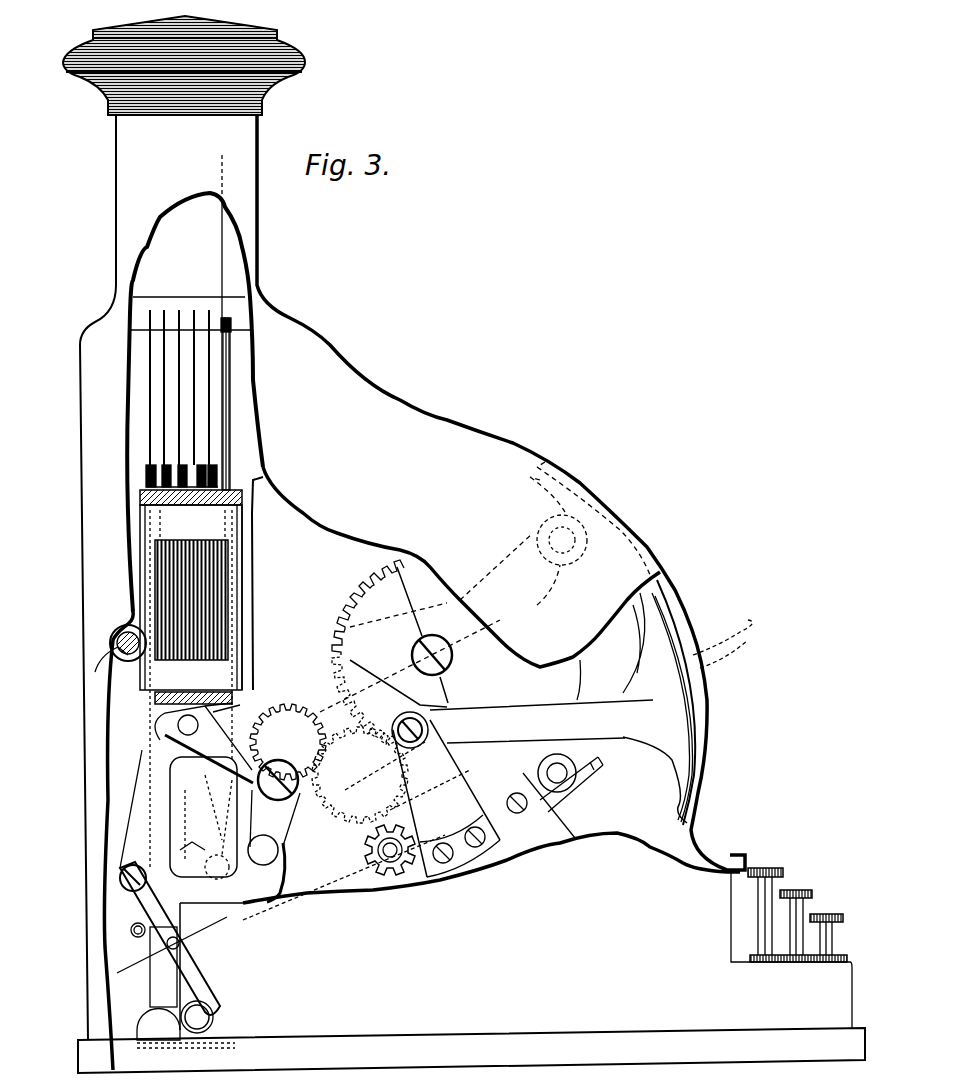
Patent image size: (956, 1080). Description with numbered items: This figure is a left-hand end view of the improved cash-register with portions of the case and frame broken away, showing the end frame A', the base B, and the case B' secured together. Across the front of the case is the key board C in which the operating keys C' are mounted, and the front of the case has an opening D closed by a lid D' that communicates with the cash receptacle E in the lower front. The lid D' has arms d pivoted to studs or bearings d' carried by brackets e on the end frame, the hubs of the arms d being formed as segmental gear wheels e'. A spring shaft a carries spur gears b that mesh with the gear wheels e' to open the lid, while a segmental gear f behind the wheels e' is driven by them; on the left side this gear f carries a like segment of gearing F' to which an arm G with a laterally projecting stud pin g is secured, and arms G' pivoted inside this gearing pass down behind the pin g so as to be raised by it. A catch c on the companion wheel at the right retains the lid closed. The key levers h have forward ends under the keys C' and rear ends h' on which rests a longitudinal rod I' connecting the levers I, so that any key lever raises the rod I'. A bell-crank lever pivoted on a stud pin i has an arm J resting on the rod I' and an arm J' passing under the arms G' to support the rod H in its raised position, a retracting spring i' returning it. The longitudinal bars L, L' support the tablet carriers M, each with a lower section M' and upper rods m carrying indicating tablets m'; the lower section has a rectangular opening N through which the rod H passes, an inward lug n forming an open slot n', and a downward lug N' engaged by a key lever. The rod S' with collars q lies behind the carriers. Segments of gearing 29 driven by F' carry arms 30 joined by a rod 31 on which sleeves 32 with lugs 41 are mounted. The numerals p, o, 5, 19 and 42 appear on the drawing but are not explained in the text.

The base B is at (464, 544).
The case B' is at (428, 768).
The end frame A' is at (325, 535).
The upper sections or rods m is at (195, 404).
The indicating tablets m' is at (186, 310).
The longitudinal bar L is at (169, 494).
The longitudinal bar L' is at (175, 693).
The tablet carrier M is at (267, 558).
The lower section M' is at (191, 687).
The rectangular opening N is at (262, 597).
The downwardly projecting lug N' is at (203, 818).
The inwardly extending lug n is at (183, 775).
The open slot n' is at (176, 789).
The rod S' is at (123, 628).
The pin p is at (116, 641).
The fixed collar q is at (107, 663).
The arm G is at (282, 827).
The arm G' is at (199, 734).
The stud pin g is at (285, 872).
The rod H is at (170, 740).
The bell-crank lever arm J is at (170, 938).
The bell-crank lever arm J' is at (135, 809).
The catch c is at (278, 780).
The segment of gearing F' is at (288, 741).
The segmental gear f is at (302, 757).
The bracket e is at (446, 794).
The segmental gear wheel e' is at (368, 652).
The shaft o is at (418, 659).
The segment of gearing 29 is at (399, 637).
The arm 30 is at (410, 657).
The connecting rod 5 is at (537, 610).
The arm d is at (541, 721).
The stud or bearing d' is at (407, 776).
The screws 19 is at (471, 842).
The sleeve 32 is at (535, 805).
The rod 31 is at (560, 780).
The lug 41 is at (580, 790).
The stop 42 is at (596, 762).
The cash receptacle E is at (680, 800).
The opening D is at (699, 702).
The lid D' is at (706, 707).
The key board C is at (802, 940).
The operating keys C' is at (795, 900).
The stud pin i is at (147, 882).
The retracting spring i' is at (172, 948).
The key lever h is at (178, 1020).
The rear end h' is at (163, 967).
The lever I is at (312, 936).
The longitudinal rod I' is at (200, 999).
The spring shaft a is at (390, 855).
The spur gear b is at (372, 858).